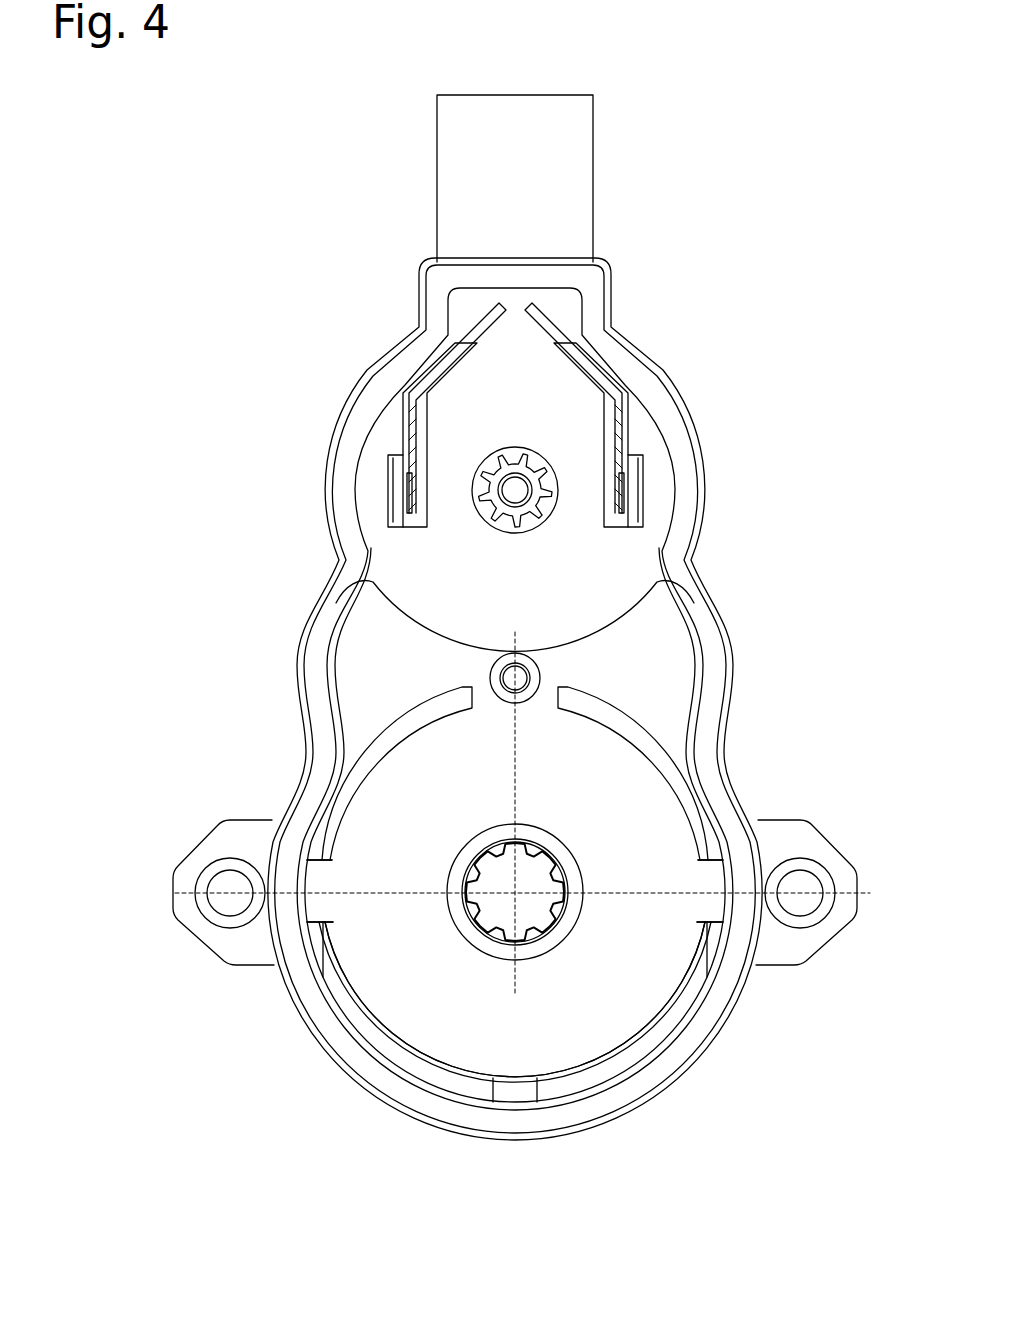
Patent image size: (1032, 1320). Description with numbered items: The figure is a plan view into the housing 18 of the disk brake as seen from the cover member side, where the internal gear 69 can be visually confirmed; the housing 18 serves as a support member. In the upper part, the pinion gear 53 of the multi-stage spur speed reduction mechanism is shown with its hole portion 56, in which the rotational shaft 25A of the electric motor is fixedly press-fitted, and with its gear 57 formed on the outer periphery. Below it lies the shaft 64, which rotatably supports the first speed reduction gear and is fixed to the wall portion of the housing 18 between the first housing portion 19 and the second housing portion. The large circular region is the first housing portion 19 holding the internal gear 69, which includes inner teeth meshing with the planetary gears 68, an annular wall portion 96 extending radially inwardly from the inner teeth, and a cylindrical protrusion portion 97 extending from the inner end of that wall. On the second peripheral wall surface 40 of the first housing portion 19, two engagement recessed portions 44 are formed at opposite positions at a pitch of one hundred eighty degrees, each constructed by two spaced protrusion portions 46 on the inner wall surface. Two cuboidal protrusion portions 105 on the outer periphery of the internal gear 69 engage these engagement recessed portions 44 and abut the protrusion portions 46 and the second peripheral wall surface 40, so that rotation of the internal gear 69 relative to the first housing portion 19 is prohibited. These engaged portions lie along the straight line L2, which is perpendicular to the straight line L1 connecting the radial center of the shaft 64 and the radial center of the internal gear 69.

The housing 18 is at (410, 1128).
The first housing portion 19 is at (678, 1053).
The rotational shaft 25A is at (517, 486).
The second peripheral wall surface 40 is at (386, 1050).
The engagement recessed portion 44 is at (318, 935).
The protrusion portion 46 is at (328, 852).
The pinion gear 53 is at (522, 447).
The hole portion 56 is at (552, 470).
The gear 57 is at (490, 460).
The shaft 64 is at (540, 672).
The planetary gear 68 is at (505, 942).
The internal gear 69 is at (393, 985).
The annular wall portion 96 is at (607, 999).
The cylindrical protrusion portion 97 is at (523, 946).
The protrusion portion 105 is at (232, 821).
The straight line L1 is at (519, 737).
The straight line L2 is at (648, 882).